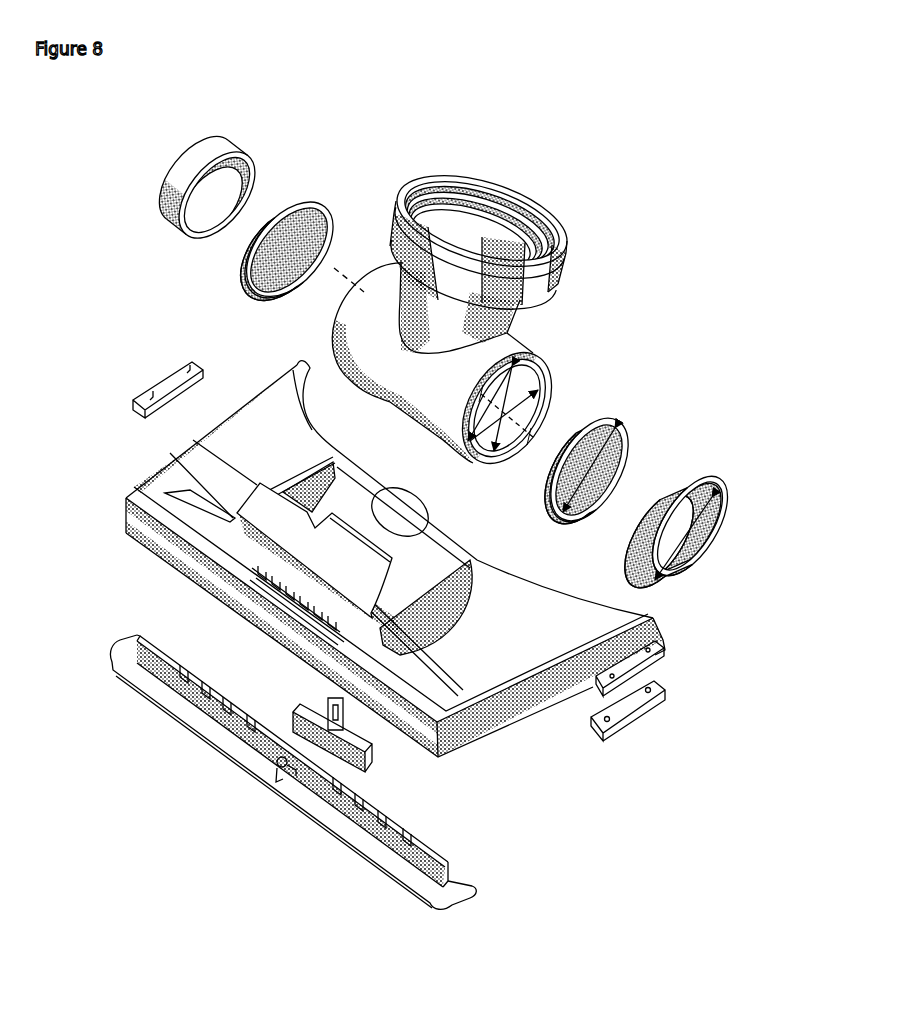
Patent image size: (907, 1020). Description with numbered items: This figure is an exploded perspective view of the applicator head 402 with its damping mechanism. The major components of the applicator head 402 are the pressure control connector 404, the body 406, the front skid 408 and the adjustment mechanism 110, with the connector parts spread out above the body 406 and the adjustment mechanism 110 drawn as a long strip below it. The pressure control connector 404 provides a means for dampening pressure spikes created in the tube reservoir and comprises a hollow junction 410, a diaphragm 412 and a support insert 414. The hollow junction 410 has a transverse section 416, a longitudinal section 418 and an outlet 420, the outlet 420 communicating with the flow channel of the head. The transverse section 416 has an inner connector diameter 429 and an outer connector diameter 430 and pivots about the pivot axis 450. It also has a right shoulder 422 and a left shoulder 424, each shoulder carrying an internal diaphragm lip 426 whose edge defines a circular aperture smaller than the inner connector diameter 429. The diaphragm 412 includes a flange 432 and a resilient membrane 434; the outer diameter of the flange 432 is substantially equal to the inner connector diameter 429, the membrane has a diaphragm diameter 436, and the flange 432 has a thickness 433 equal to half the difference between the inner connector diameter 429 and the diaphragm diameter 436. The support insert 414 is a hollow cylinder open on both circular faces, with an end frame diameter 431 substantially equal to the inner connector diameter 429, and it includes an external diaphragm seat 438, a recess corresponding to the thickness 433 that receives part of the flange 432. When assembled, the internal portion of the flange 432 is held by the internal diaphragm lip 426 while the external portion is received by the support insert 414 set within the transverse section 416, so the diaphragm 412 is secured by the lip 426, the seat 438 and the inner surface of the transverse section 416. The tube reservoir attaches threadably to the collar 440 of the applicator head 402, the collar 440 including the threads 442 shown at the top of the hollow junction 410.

The adjustment mechanism 110 is at (150, 812).
The applicator head 402 is at (606, 148).
The pressure control connector 404 is at (742, 352).
The body 406 is at (277, 387).
The front skid 408 is at (163, 383).
The hollow junction 410 is at (479, 219).
The diaphragm 412 is at (302, 205).
The support insert 414 is at (212, 143).
The transverse section 416 is at (375, 323).
The longitudinal section 418 is at (400, 269).
The outlet 420 is at (397, 382).
The right shoulder 422 is at (363, 335).
The left shoulder 424 is at (449, 452).
The internal diaphragm lip 426 is at (533, 352).
The inner connector diameter 429 is at (550, 448).
The outer connector diameter 430 is at (497, 455).
The frame diameter 431 is at (720, 540).
The flange 432 is at (608, 427).
The thickness 433 is at (577, 524).
The resilient membrane 434 is at (630, 451).
The diaphragm diameter 436 is at (618, 472).
The external diaphragm seat 438 is at (668, 487).
The collar 440 is at (557, 282).
The threads 442 is at (438, 192).
The pivot axis 450 is at (553, 437).